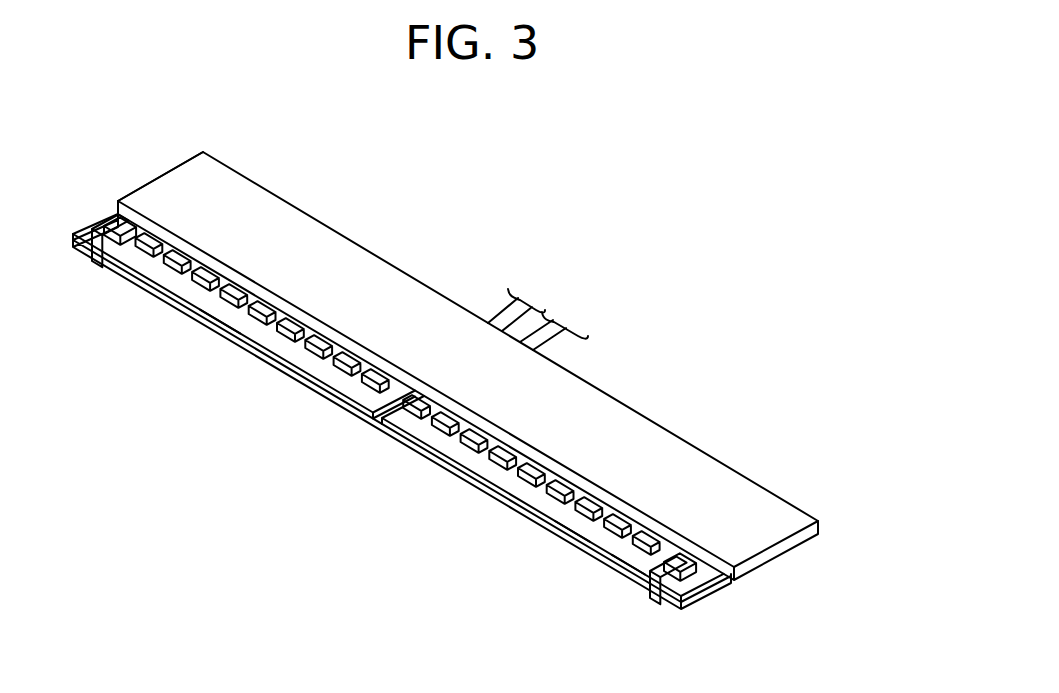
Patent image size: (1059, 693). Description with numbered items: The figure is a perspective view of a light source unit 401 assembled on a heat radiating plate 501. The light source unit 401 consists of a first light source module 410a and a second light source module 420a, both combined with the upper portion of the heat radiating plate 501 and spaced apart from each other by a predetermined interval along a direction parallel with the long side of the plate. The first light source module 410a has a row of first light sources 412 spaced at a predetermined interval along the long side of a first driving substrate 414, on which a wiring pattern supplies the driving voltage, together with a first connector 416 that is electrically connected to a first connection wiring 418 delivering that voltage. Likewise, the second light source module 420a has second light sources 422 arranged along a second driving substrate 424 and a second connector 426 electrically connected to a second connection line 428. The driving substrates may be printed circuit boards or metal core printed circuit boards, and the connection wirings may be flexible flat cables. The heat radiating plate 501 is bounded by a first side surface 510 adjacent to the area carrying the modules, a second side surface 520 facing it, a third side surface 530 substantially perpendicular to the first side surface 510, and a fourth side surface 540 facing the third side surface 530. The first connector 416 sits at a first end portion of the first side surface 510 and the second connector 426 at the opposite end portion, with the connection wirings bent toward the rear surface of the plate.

The heat radiating plate 501 is at (446, 397).
The first side surface 510 is at (705, 593).
The second side surface 520 is at (694, 443).
The third side surface 530 is at (785, 547).
The fourth side surface 540 is at (157, 176).
The light source unit 401 is at (370, 424).
The first light source module 410a is at (230, 297).
The first light sources 412 is at (281, 338).
The first driving substrate 414 is at (217, 312).
The first connector 416 is at (107, 280).
The first connection wiring 418 is at (100, 231).
The second light source module 420a is at (539, 533).
The second light sources 422 is at (525, 480).
The second driving substrate 424 is at (570, 522).
The second connector 426 is at (630, 567).
The second connection line 428 is at (657, 612).